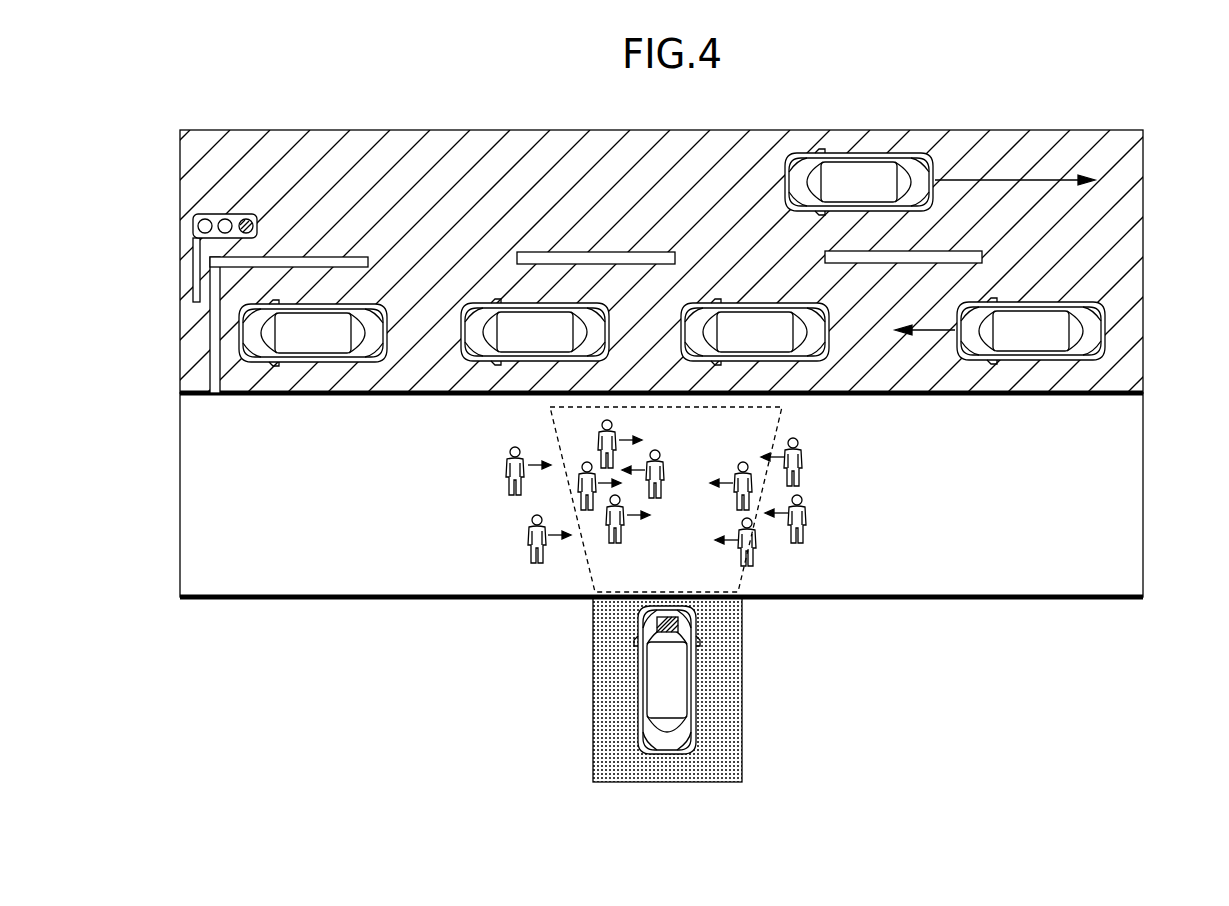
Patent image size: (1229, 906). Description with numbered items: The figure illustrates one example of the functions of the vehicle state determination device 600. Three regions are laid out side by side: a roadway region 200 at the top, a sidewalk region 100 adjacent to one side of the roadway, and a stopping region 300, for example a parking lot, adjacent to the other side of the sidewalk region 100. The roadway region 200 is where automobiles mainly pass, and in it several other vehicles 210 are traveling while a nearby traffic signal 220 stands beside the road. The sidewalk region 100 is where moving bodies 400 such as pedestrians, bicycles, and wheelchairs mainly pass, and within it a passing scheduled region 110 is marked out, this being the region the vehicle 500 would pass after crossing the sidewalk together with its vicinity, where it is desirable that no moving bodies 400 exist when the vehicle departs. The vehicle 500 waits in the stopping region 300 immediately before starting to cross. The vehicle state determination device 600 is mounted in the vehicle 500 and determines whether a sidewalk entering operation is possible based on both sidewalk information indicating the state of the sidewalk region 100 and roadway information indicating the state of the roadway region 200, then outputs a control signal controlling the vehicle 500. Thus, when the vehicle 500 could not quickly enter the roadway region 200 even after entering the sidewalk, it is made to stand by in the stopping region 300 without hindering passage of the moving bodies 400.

The sidewalk region 100 is at (1143, 492).
The passing scheduled region 110 is at (778, 420).
The roadway region 200 is at (1143, 265).
The other vehicles 210 is at (1080, 348).
The traffic signal 220 is at (193, 229).
The stopping region 300 is at (742, 678).
The moving bodies 400 is at (806, 505).
The vehicle 500 is at (680, 726).
The vehicle state determination device 600 is at (680, 620).